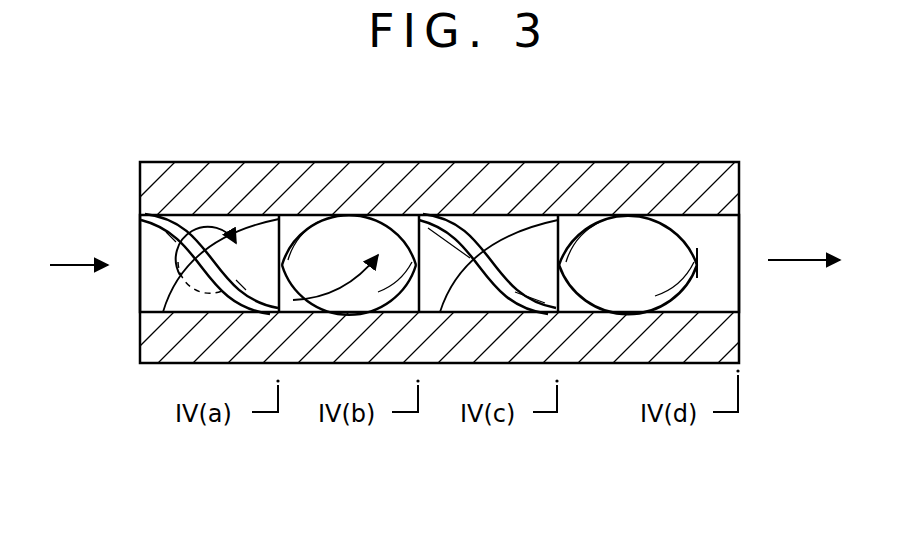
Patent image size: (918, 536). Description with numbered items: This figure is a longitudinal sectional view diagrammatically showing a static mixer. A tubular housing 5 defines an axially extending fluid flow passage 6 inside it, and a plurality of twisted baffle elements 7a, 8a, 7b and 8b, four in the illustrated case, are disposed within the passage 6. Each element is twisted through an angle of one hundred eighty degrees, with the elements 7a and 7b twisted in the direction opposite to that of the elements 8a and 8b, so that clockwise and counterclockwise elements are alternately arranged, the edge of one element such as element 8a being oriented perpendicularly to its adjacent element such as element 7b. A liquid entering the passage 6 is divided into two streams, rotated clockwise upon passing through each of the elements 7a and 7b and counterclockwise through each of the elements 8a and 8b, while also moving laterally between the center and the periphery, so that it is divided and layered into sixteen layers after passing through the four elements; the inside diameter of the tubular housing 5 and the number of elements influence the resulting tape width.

The tubular housing 5 is at (694, 180).
The fluid flow passage 6 is at (724, 231).
The twisted baffle element 7a is at (156, 222).
The twisted baffle element 8a is at (341, 230).
The twisted baffle element 7b is at (443, 230).
The twisted baffle element 8b is at (612, 236).